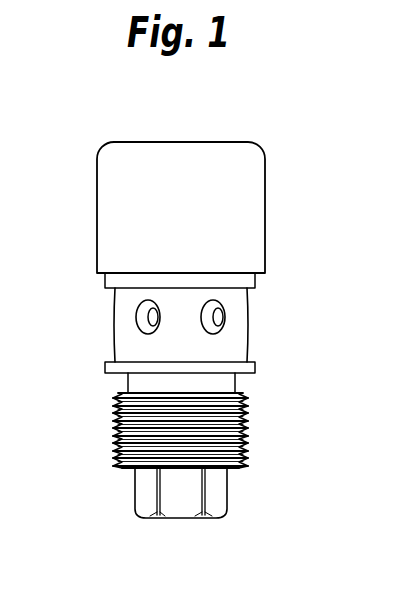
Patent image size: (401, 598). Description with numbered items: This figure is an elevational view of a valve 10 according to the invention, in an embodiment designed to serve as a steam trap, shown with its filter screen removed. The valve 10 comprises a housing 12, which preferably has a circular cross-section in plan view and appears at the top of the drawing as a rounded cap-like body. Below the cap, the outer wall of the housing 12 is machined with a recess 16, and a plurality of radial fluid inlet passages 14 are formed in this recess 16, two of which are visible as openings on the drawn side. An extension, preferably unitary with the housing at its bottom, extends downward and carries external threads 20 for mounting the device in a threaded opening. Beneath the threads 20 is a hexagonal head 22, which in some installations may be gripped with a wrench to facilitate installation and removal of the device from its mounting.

The valve 10 is at (198, 331).
The housing 12 is at (97, 220).
The radial fluid inlet passages 14 is at (136, 318).
The recess 16 is at (248, 340).
The external threads 20 is at (247, 427).
The hexagonal head 22 is at (228, 488).